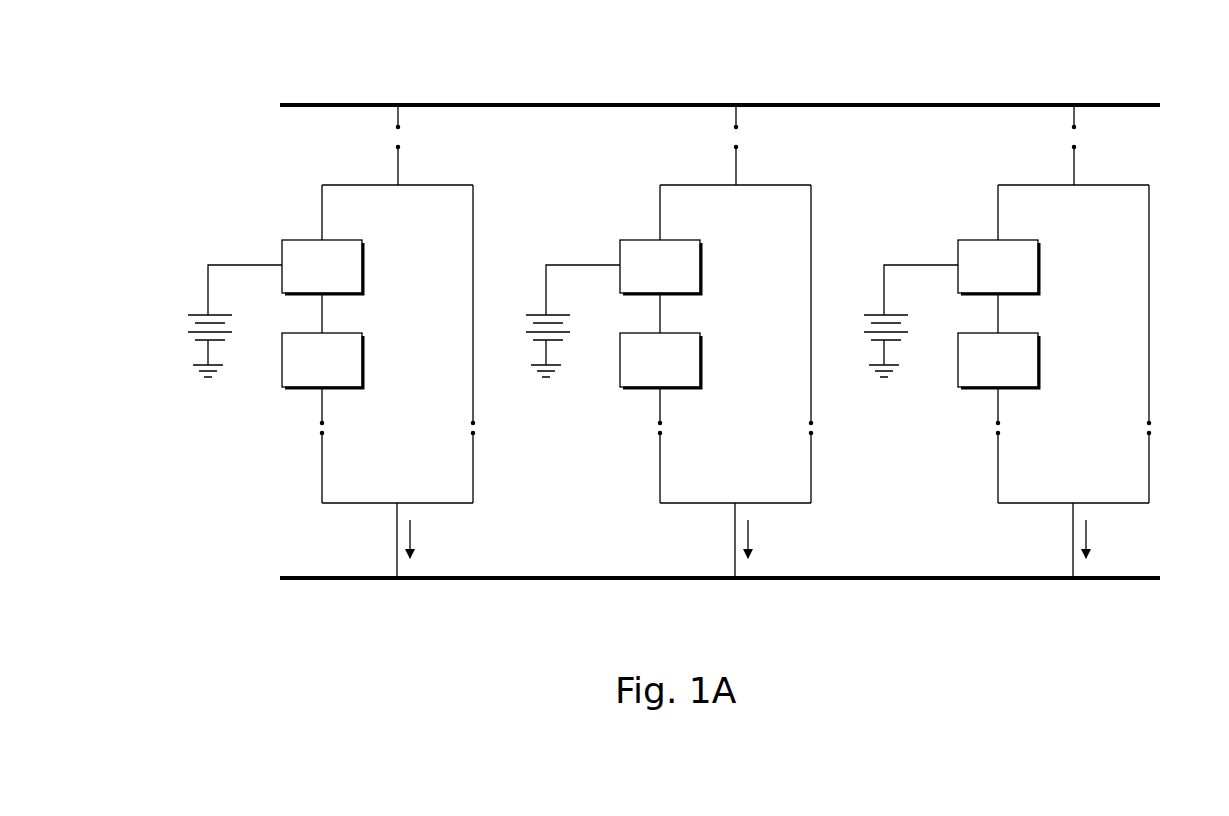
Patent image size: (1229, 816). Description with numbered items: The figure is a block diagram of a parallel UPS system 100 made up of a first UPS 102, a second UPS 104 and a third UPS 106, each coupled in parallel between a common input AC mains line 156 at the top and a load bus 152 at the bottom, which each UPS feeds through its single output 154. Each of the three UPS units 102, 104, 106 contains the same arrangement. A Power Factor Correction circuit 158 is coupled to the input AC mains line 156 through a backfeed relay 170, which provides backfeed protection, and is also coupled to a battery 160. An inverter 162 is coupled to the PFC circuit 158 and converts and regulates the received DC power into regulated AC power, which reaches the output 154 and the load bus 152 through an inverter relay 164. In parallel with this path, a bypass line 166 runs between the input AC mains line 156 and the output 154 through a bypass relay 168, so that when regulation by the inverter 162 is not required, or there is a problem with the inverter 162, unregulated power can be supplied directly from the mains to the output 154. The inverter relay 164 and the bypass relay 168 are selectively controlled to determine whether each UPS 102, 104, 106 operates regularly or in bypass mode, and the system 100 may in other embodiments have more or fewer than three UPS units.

The parallel UPS system 100 is at (274, 78).
The first UPS 102 is at (316, 180).
The second UPS 104 is at (654, 180).
The third UPS 106 is at (992, 180).
The load bus 152 is at (1137, 581).
The output 154 is at (397, 505).
The input AC mains line 156 is at (1150, 82).
The Power Factor Correction (PFC) circuit 158 is at (362, 254).
The battery 160 is at (213, 343).
The inverter 162 is at (362, 347).
The inverter relay 164 is at (303, 438).
The bypass line 166 is at (473, 300).
The bypass relay 168 is at (460, 437).
The backfeed relay 170 is at (380, 151).